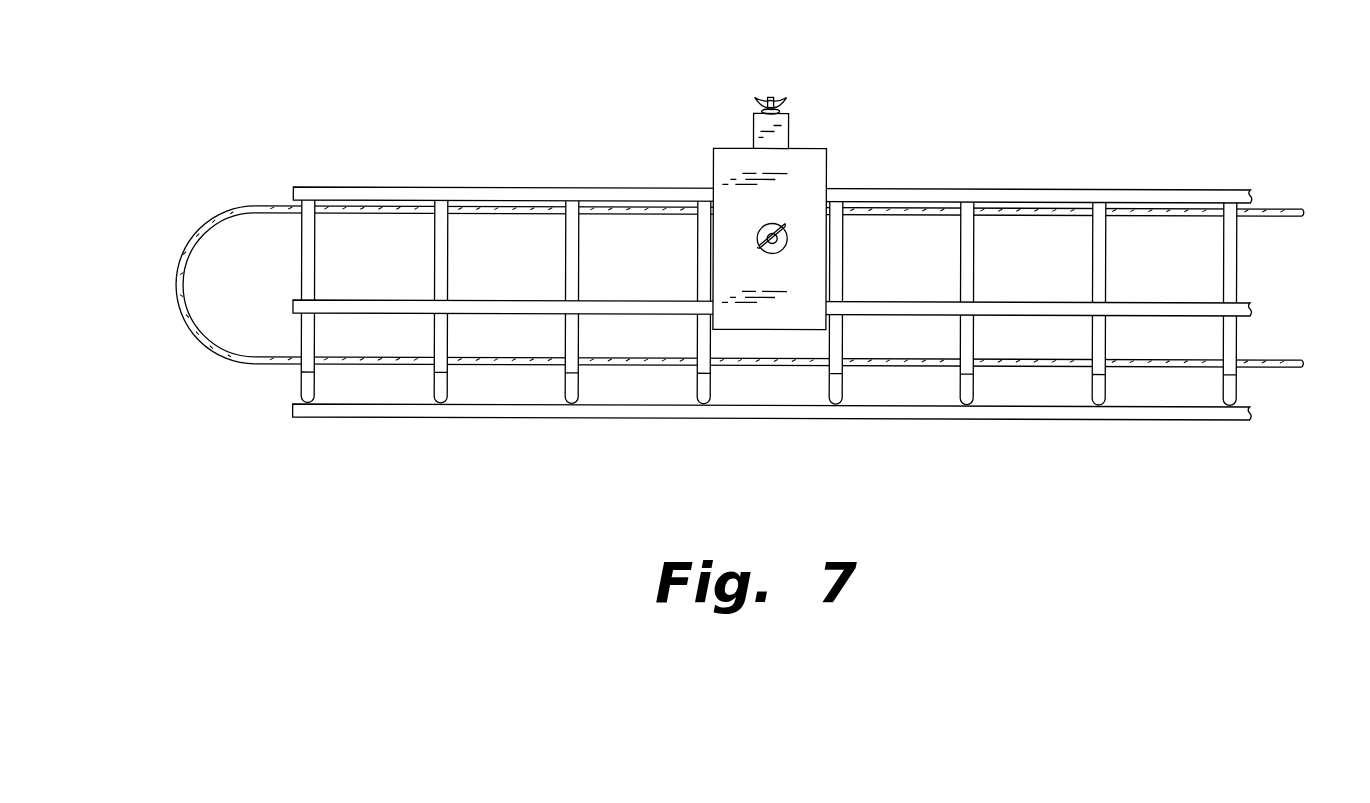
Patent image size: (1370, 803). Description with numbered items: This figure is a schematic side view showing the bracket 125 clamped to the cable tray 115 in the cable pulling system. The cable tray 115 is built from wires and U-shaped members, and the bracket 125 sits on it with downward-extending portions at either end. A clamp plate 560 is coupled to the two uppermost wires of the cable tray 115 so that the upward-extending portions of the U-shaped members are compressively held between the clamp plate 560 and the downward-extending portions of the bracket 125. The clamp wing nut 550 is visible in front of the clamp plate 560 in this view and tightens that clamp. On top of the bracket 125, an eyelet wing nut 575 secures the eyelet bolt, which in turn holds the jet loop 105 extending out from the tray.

The jet loop 105 is at (200, 230).
The cable tray 115 is at (353, 187).
The bracket 125 is at (753, 126).
The clamp wing nut 550 is at (786, 227).
The clamp plate 560 is at (713, 163).
The eyelet wing nut 575 is at (785, 97).